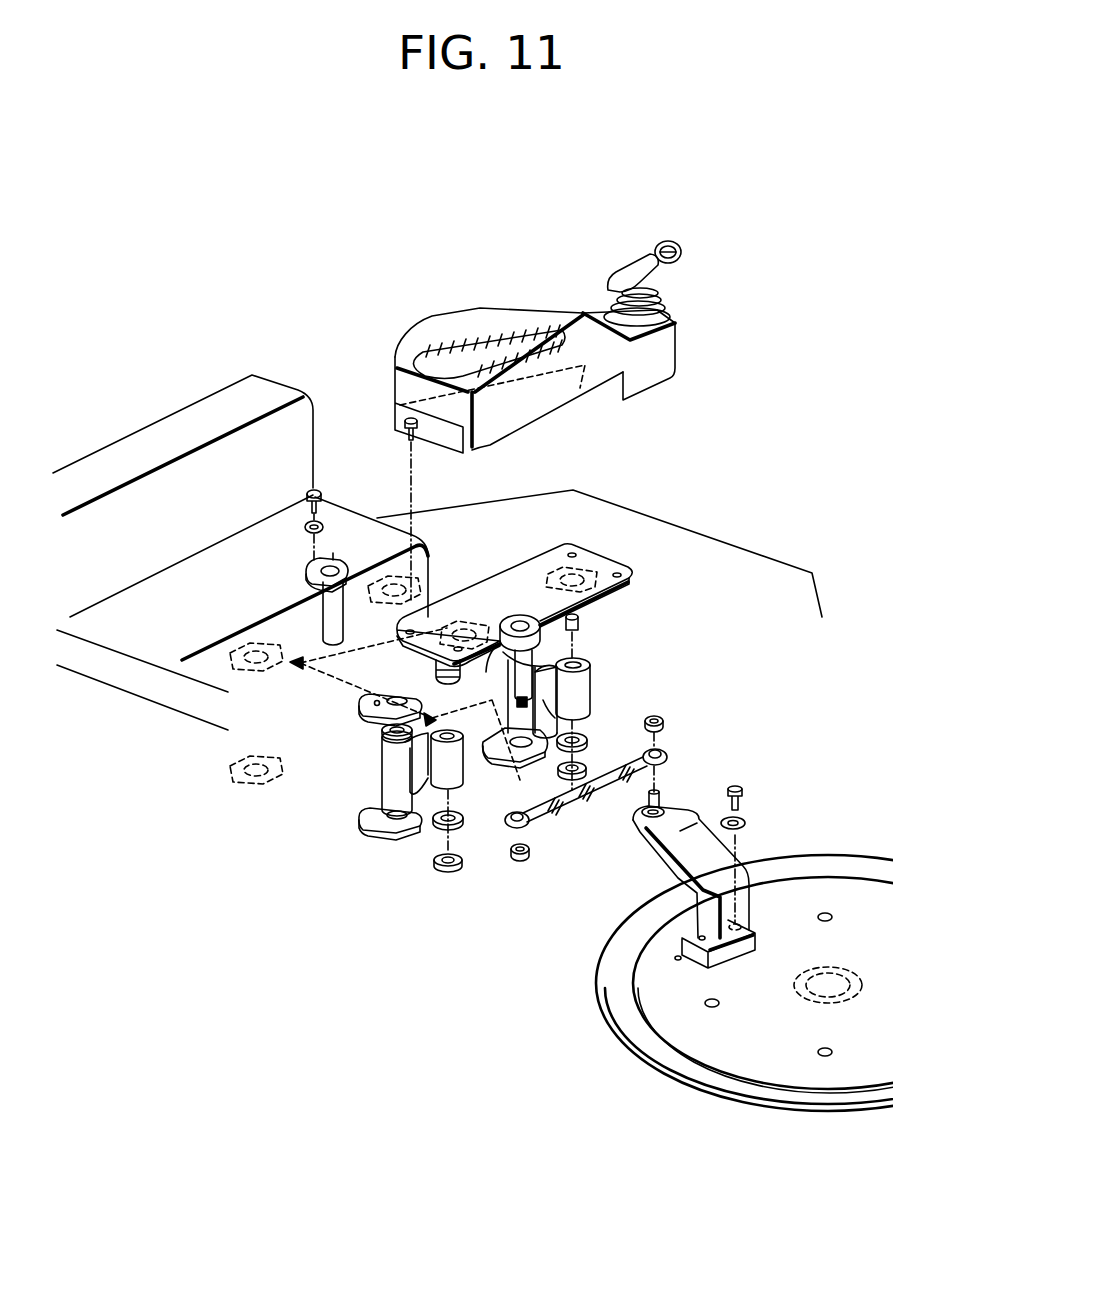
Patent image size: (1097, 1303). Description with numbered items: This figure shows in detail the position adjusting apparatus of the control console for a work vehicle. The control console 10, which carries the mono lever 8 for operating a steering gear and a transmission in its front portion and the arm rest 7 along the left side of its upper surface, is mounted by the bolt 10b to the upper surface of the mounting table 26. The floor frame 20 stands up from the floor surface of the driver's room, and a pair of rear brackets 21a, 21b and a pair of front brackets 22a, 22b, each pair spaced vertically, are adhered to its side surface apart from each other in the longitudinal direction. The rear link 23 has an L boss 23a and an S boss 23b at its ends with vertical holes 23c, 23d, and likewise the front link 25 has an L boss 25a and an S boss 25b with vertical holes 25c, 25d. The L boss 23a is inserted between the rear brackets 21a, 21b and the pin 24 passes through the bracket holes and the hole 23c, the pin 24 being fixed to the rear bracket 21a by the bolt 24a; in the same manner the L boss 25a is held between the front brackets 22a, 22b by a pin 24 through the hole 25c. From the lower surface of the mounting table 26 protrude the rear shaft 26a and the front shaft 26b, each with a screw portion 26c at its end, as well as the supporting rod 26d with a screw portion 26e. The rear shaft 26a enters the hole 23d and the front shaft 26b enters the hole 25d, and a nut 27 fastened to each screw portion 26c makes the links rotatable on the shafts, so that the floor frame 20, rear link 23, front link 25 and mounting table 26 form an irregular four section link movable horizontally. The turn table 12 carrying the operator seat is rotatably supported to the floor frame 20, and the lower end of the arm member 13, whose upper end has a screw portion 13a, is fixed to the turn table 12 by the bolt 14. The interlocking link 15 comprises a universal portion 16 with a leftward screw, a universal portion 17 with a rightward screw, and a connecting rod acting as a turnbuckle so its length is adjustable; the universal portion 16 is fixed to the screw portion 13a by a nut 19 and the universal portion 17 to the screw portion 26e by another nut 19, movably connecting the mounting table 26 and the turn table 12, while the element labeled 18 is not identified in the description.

The arm rest 7 is at (510, 330).
The mono lever 8 is at (615, 266).
The control console 10 is at (646, 402).
The bolt 10b is at (404, 420).
The turn table 12 is at (652, 1040).
The arm member 13 is at (690, 812).
The screw portion 13a is at (660, 795).
The bolt 14 is at (743, 797).
The interlocking link 15 is at (578, 835).
The universal portion 16 is at (668, 757).
The universal portion 17 is at (510, 836).
The clip 18 is at (588, 803).
The nut 19 is at (665, 724).
The floor frame 20 is at (143, 435).
The rear bracket 21a is at (362, 712).
The rear bracket 21b is at (368, 832).
The front bracket 22a is at (598, 622).
The front bracket 22b is at (535, 762).
The rear link 23 is at (375, 762).
The L boss 23a is at (383, 782).
The S boss 23b is at (456, 784).
The vertical hole 23c is at (382, 730).
The vertical hole 23d is at (419, 832).
The pin 24 is at (323, 600).
The bolt 24a is at (320, 492).
The front link 25 is at (600, 700).
The L boss 25a is at (556, 708).
The S boss 25b is at (590, 672).
The vertical hole 25c is at (558, 665).
The vertical hole 25d is at (578, 628).
The mounting table 26 is at (580, 554).
The rear shaft 26a is at (418, 668).
The front shaft 26b is at (600, 595).
The screw portion 26c is at (430, 652).
The supporting rod 26d is at (457, 688).
The screw portion 26e is at (517, 702).
The nut 27 is at (588, 767).